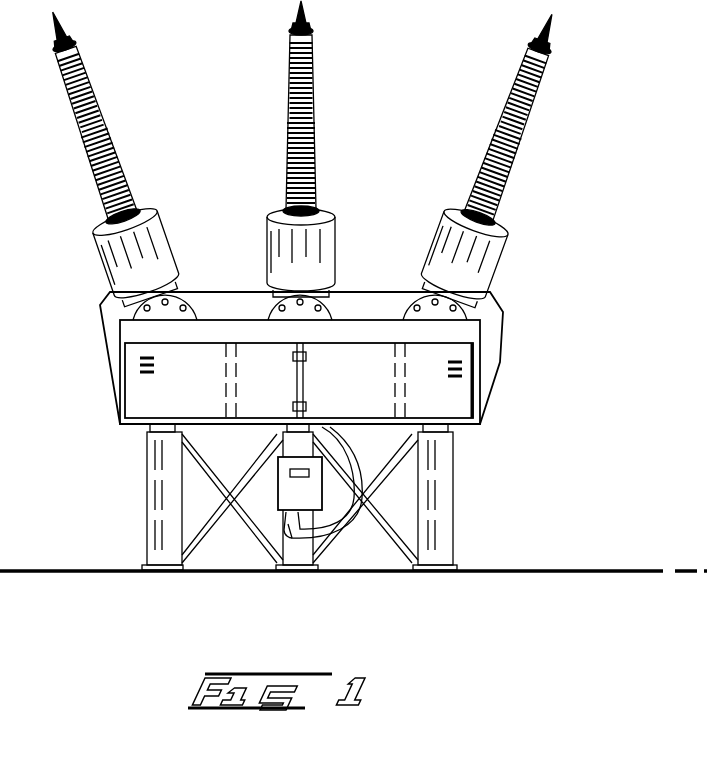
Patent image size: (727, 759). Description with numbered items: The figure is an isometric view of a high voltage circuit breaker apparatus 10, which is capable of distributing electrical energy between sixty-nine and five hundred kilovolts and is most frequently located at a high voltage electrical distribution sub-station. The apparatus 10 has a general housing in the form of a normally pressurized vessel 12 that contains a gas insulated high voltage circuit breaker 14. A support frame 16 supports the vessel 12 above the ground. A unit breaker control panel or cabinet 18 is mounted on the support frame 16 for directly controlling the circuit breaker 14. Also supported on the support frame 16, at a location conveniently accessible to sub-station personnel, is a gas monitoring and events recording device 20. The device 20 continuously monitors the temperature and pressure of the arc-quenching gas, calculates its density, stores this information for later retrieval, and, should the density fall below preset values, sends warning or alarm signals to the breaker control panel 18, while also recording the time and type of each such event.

The high voltage circuit breaker apparatus 10 is at (538, 257).
The pressurized vessel 12 is at (492, 360).
The gas insulated high voltage circuit breaker 14 is at (496, 298).
The support frame 16 is at (438, 545).
The breaker control panel or cabinet 18 is at (138, 405).
The gas monitoring and events recording device 20 is at (270, 503).